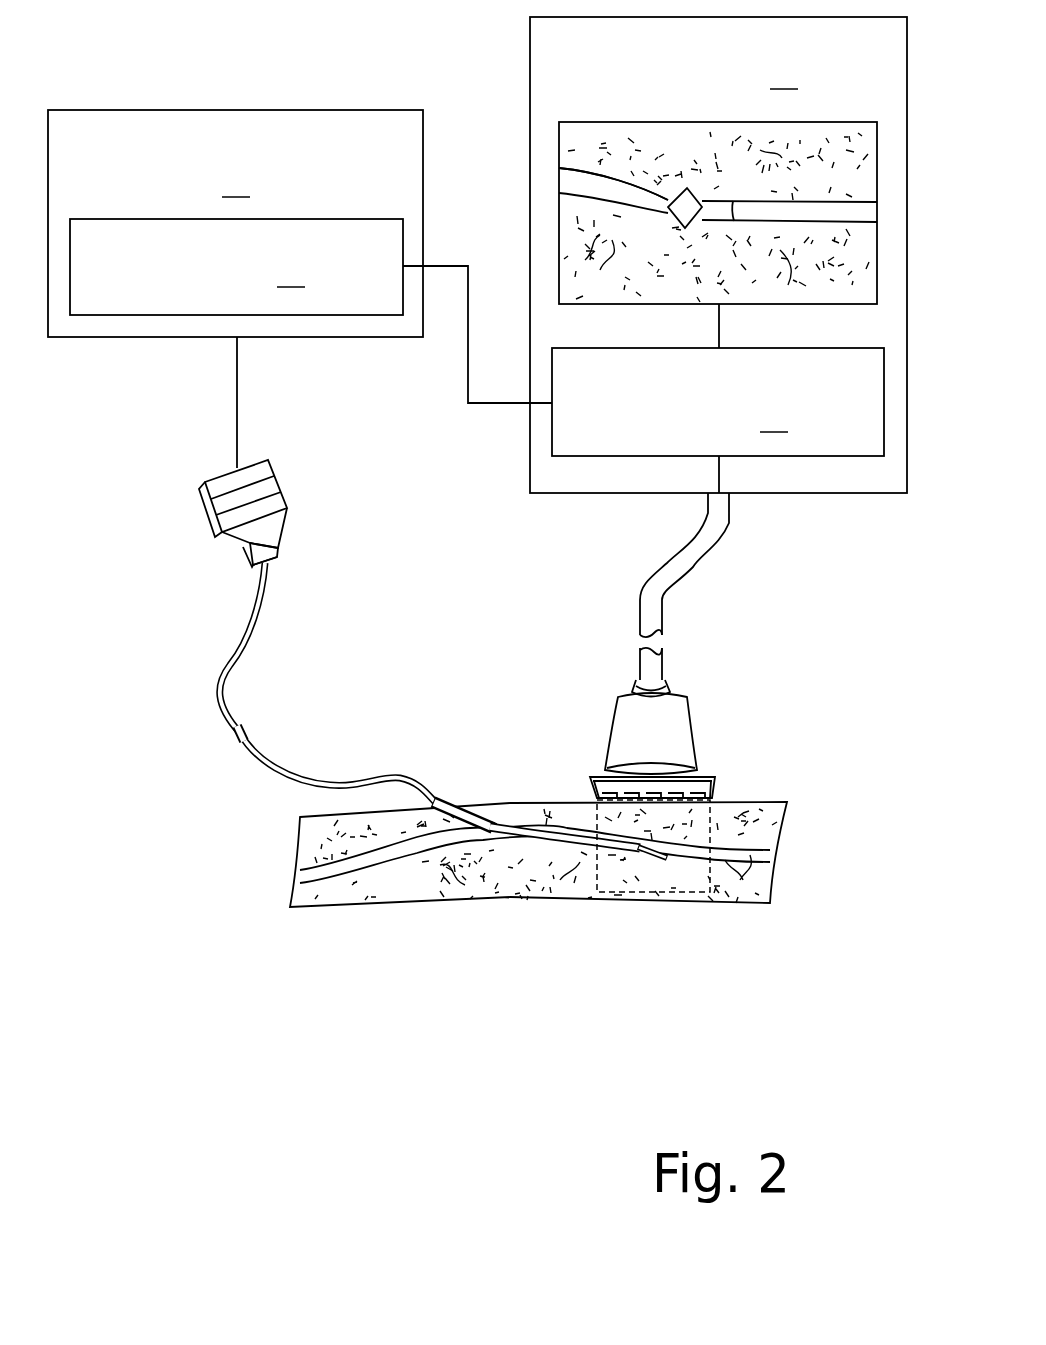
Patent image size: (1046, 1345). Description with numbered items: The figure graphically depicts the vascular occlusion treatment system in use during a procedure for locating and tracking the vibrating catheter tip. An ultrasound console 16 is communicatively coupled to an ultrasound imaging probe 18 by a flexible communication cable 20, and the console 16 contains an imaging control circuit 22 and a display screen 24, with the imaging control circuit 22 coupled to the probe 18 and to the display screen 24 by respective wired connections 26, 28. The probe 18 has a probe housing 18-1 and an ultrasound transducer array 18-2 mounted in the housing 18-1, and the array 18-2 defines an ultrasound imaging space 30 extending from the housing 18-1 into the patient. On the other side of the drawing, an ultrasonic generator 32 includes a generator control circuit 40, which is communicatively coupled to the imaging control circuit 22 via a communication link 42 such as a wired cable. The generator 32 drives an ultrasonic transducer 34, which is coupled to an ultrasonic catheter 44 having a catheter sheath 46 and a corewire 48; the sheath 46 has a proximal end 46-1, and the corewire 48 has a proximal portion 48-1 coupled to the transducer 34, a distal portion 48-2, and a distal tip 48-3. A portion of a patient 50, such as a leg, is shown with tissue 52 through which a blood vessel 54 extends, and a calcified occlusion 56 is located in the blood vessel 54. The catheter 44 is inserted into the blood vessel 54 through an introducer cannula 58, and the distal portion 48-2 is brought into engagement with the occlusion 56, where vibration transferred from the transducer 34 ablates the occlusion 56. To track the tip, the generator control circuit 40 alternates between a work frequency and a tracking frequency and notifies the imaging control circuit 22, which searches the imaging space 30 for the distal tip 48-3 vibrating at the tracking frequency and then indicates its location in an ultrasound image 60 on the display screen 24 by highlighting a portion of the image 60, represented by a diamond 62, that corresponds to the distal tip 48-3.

The ultrasound console 16 is at (718, 255).
The ultrasound imaging probe 18 is at (691, 645).
The probe housing 18-1 is at (688, 712).
The ultrasound transducer array 18-2 is at (700, 777).
The flexible communication cable 20 is at (640, 665).
The imaging control circuit 22 is at (718, 402).
The display screen 24 is at (878, 160).
The wired connection 26 is at (719, 481).
The wired connection 28 is at (719, 320).
The ultrasound imaging space 30 is at (713, 840).
The ultrasonic generator 32 is at (235, 289).
The ultrasonic transducer 34 is at (280, 480).
The generator control circuit 40 is at (236, 267).
The communication link 42 is at (448, 266).
The ultrasonic catheter 44 is at (190, 688).
The catheter sheath 46 is at (348, 773).
The proximal end 46-1 is at (257, 570).
The corewire 48 is at (238, 735).
The proximal portion 48-1 is at (273, 543).
The distal portion 48-2 is at (625, 851).
The distal tip 48-3 is at (655, 849).
The patient 50 is at (538, 728).
The tissue 52 is at (512, 801).
The blood vessel 54 is at (826, 214).
The calcified occlusion 56 is at (720, 212).
The introducer cannula 58 is at (465, 808).
The ultrasound image 60 is at (605, 128).
The diamond 62 is at (617, 170).